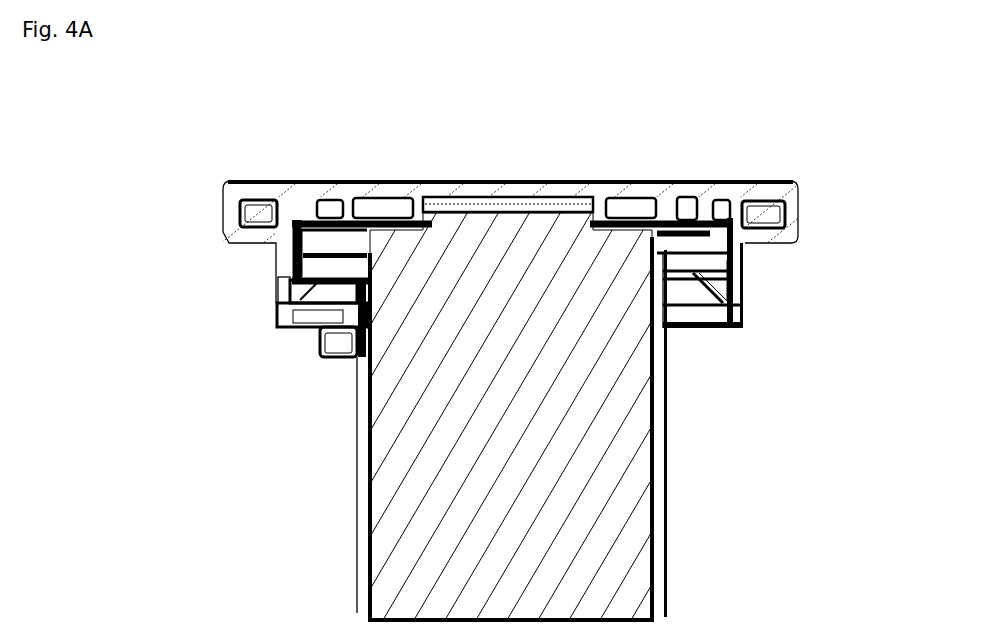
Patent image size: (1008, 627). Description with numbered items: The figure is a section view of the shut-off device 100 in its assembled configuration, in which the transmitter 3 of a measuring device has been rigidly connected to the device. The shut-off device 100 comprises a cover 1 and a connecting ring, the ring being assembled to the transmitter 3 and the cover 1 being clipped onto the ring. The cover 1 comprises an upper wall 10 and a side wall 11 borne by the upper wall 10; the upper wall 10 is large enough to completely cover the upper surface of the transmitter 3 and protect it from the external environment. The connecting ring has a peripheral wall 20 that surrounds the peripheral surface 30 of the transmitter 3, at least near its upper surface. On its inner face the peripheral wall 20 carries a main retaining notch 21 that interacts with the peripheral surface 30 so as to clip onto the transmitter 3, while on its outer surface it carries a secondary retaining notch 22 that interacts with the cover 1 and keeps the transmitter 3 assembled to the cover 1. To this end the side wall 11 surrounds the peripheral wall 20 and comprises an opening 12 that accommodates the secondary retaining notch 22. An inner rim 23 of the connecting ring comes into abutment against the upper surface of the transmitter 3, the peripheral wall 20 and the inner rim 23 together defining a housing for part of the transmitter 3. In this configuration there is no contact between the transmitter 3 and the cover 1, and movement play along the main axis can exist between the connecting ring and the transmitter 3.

The shut-off device 100 is at (141, 235).
The cover 1 is at (207, 183).
The transmitter 3 is at (329, 457).
The upper wall 10 is at (469, 180).
The side wall 11 is at (276, 262).
The opening 12 is at (281, 297).
The peripheral wall 20 is at (780, 237).
The main retaining notch 21 is at (729, 274).
The secondary retaining notch 22 is at (733, 300).
The inner rim 23 is at (694, 214).
The peripheral surface 30 is at (316, 235).